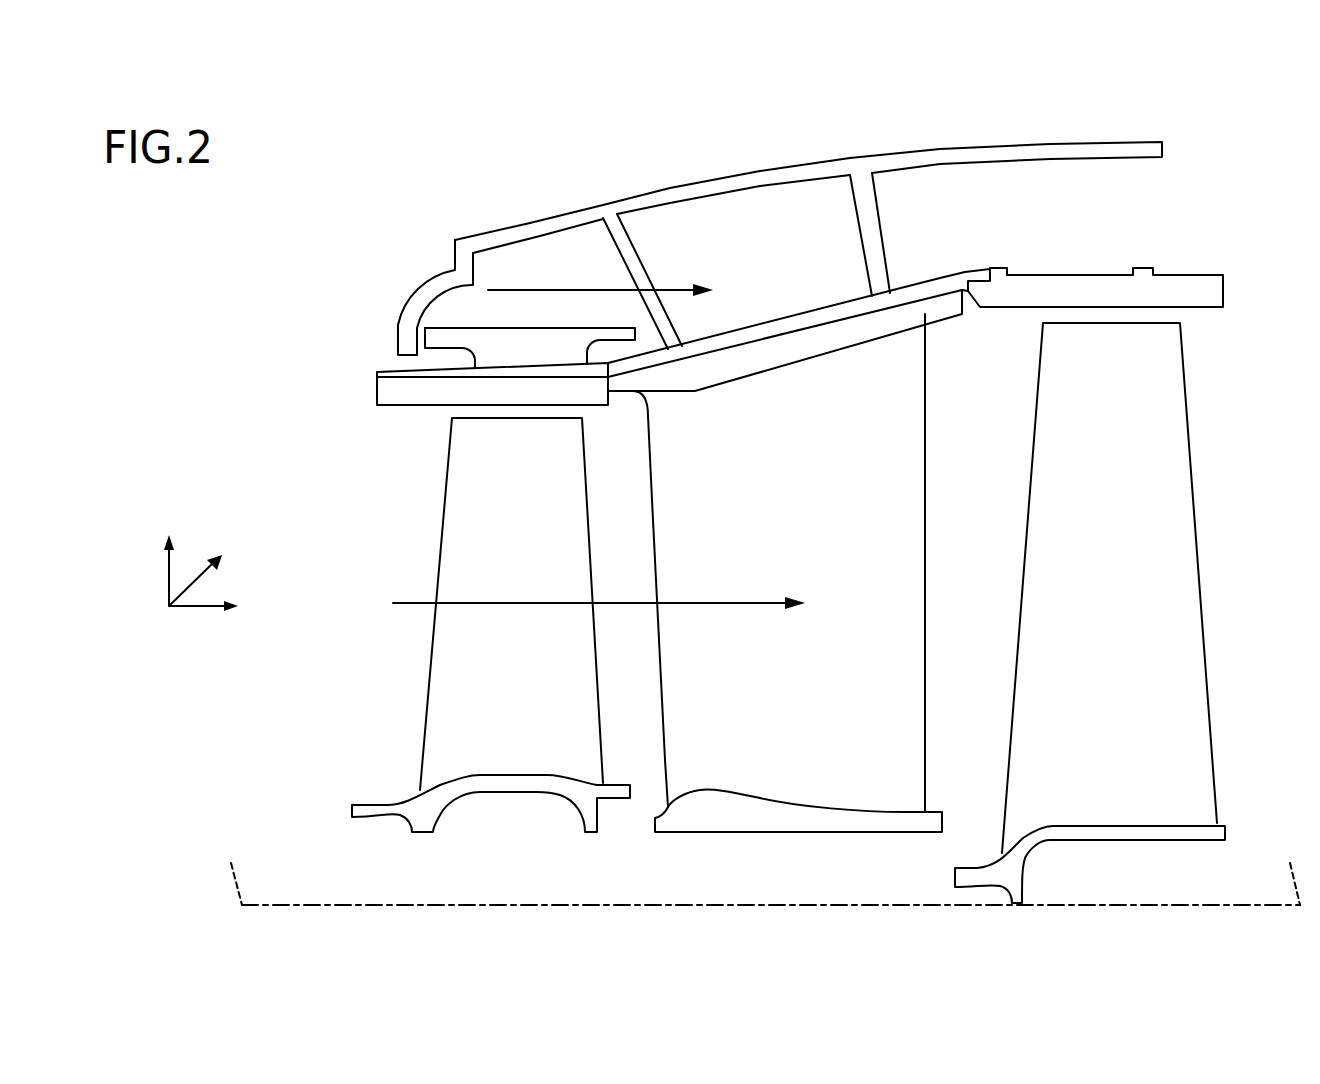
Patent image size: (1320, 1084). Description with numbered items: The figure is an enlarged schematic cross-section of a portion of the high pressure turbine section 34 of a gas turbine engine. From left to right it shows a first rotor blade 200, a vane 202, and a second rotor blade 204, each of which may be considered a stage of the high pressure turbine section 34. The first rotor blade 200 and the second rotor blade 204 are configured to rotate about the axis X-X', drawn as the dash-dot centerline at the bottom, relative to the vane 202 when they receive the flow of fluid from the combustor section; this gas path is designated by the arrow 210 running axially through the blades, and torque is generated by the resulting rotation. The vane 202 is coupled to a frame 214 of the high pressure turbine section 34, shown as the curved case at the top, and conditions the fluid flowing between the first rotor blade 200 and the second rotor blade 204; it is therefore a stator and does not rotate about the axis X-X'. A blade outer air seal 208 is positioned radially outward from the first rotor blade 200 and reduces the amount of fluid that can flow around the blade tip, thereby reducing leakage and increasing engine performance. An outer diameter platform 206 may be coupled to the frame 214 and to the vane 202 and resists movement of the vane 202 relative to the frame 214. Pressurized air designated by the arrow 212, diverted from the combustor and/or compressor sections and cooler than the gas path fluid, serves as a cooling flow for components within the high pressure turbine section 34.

The high pressure turbine section 34 is at (366, 186).
The first rotor blade 200 is at (472, 483).
The vane 202 is at (865, 347).
The second rotor blade 204 is at (1158, 360).
The outer diameter platform 206 is at (790, 330).
The blade outer air seal 208 is at (407, 390).
The gas path flow arrow 210 is at (537, 603).
The cooling flow arrow 212 is at (542, 289).
The frame 214 is at (1010, 153).